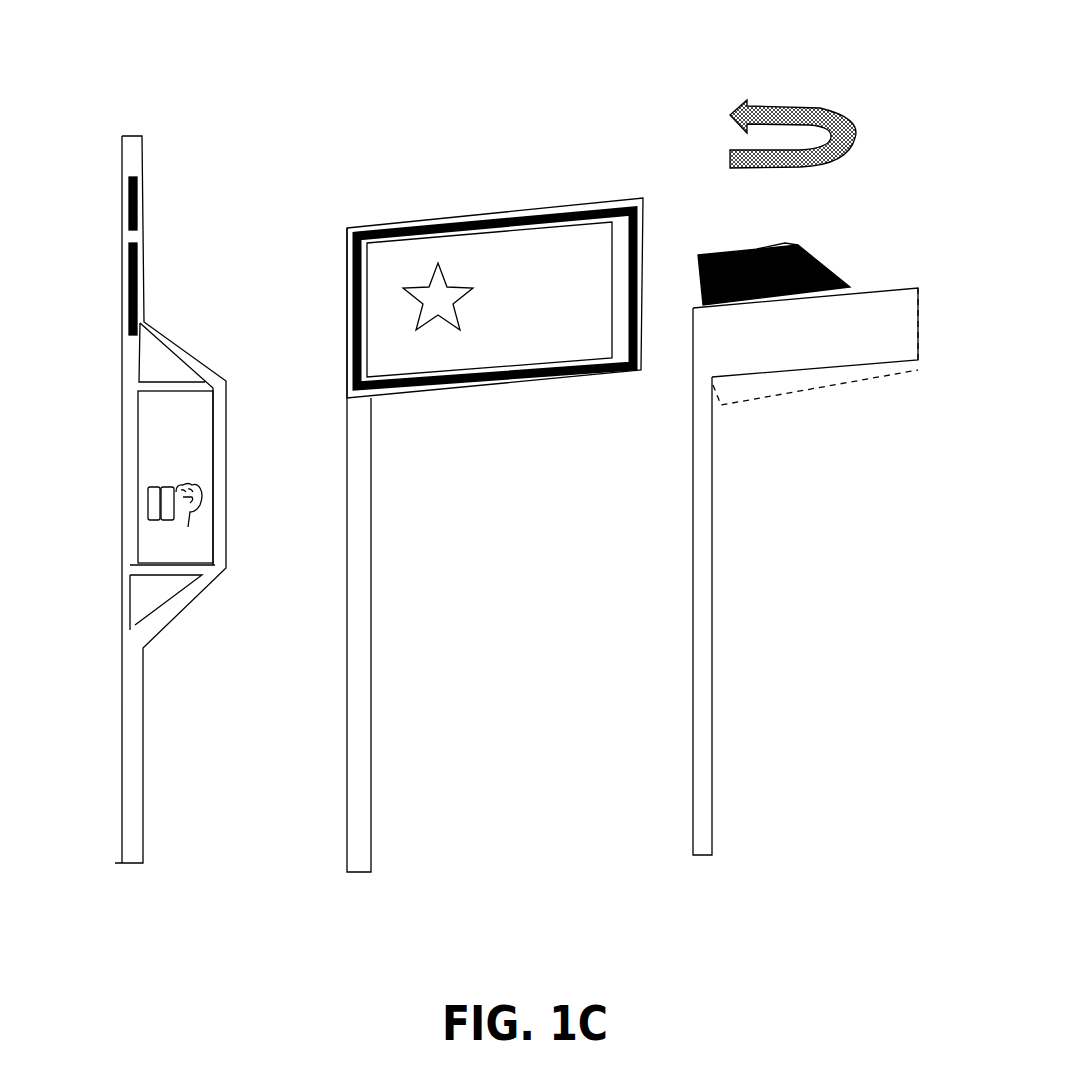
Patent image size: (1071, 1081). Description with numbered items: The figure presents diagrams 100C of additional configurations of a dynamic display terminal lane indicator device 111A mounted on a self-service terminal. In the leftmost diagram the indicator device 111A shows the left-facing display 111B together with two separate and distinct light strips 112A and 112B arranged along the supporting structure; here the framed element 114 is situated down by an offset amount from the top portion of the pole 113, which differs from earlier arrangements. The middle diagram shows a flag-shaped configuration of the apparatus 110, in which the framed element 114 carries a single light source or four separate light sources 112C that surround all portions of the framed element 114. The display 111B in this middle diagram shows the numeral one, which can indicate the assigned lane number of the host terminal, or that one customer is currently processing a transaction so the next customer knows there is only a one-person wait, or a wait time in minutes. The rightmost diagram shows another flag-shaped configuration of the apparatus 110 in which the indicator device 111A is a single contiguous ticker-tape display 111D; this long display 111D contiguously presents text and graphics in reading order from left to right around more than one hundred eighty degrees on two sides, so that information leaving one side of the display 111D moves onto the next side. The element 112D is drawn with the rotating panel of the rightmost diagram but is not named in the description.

The diagrams of additional indicator device 100C is at (145, 100).
The apparatus 110 is at (183, 633).
The pole 113 is at (143, 810).
The light strip 112A is at (132, 290).
The light strip 112B is at (132, 207).
The light sources 112C is at (508, 218).
The rotatable display panel 112D is at (727, 253).
The indicator device 111A is at (542, 413).
The left-facing display 111B is at (203, 441).
The ticker-tape display 111D is at (932, 398).
The framed element 114 is at (218, 548).